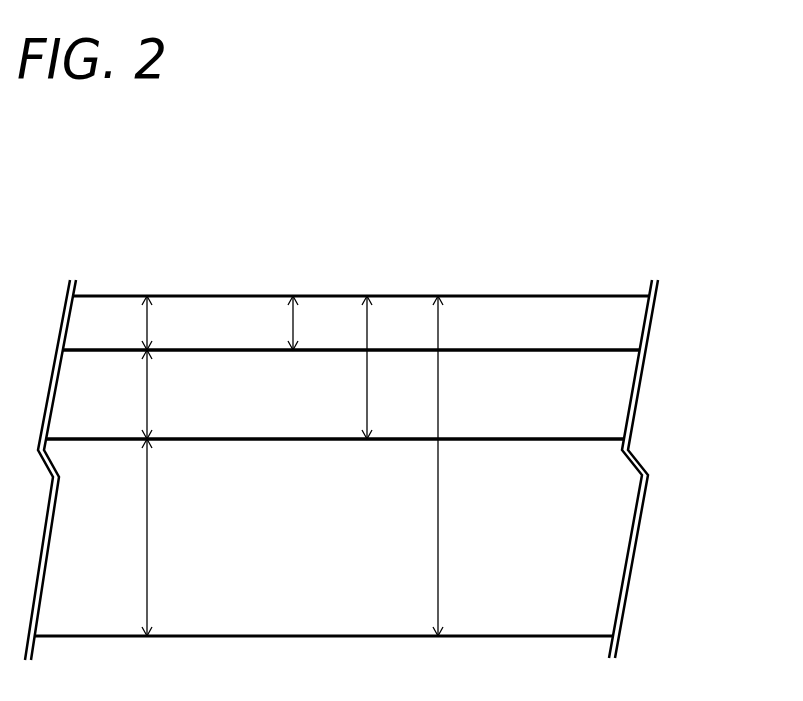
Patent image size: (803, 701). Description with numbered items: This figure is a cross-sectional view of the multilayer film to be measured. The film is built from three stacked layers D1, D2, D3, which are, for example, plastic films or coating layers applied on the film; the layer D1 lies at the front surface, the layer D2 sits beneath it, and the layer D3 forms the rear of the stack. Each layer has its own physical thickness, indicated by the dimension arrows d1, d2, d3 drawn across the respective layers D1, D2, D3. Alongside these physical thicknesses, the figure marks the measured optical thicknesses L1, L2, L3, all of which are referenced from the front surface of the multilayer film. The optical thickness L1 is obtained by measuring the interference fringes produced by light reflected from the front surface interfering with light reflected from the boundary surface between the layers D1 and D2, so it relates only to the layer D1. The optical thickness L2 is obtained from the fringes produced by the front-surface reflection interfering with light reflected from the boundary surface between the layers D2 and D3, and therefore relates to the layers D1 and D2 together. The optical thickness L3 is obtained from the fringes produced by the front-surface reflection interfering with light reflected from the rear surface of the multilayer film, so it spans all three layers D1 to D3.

The first layer D1 is at (627, 318).
The second layer D2 is at (618, 396).
The third layer D3 is at (618, 554).
The physical thickness of layer D1 d1 is at (127, 323).
The physical thickness of layer D2 d2 is at (127, 394).
The physical thickness of layer D3 d3 is at (127, 537).
The optical thickness L1 is at (271, 323).
The optical thickness L2 is at (345, 367).
The optical thickness L3 is at (410, 466).